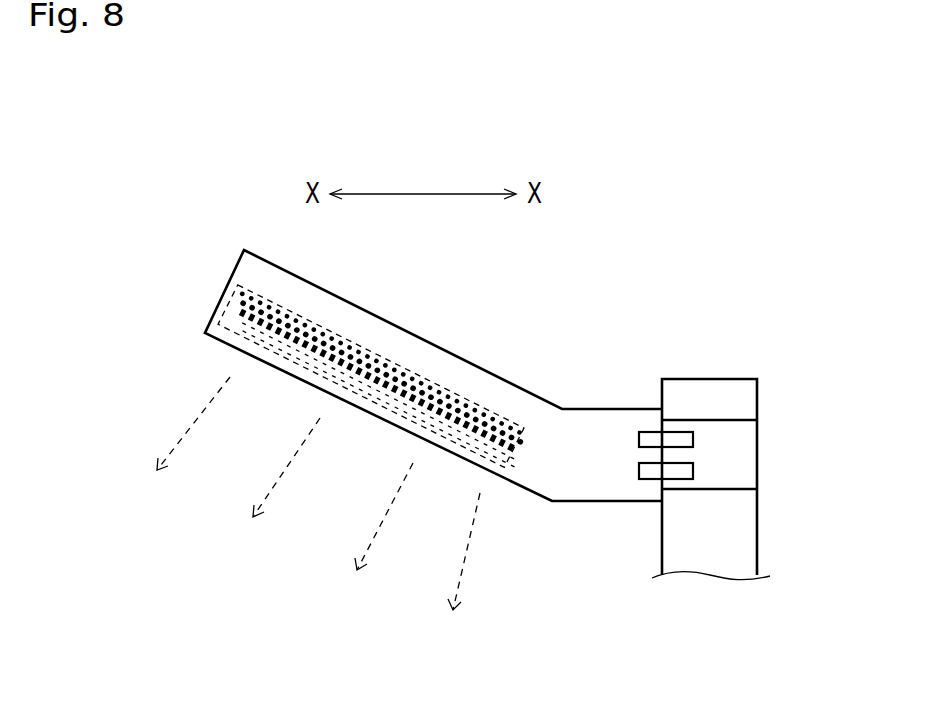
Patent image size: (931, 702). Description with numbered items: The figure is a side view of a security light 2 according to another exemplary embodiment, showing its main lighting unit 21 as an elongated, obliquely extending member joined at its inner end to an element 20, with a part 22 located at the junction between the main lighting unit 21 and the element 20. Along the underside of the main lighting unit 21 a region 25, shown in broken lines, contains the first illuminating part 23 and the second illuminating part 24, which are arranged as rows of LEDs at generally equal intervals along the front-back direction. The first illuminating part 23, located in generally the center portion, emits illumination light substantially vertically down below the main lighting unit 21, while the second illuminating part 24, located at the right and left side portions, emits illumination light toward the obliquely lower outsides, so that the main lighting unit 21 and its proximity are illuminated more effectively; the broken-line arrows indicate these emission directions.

The security light 2 is at (466, 397).
The base body 20 is at (741, 479).
The main lighting unit 21 is at (494, 348).
The connecting portion 22 is at (660, 427).
The first illuminating part 23 is at (380, 394).
The second illuminating part 24 is at (381, 396).
The nozzle plate 25 is at (328, 376).